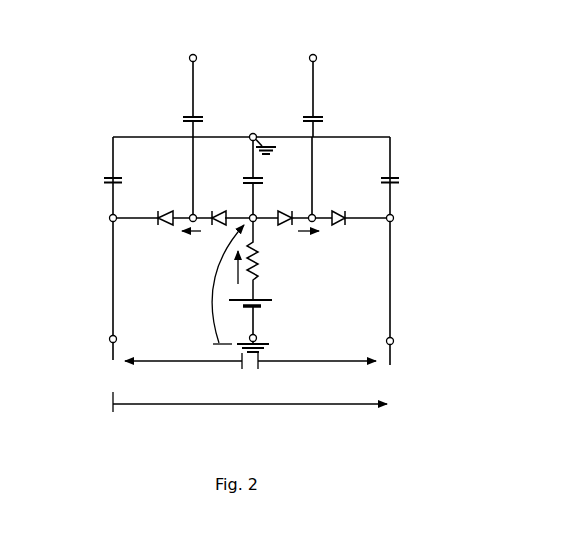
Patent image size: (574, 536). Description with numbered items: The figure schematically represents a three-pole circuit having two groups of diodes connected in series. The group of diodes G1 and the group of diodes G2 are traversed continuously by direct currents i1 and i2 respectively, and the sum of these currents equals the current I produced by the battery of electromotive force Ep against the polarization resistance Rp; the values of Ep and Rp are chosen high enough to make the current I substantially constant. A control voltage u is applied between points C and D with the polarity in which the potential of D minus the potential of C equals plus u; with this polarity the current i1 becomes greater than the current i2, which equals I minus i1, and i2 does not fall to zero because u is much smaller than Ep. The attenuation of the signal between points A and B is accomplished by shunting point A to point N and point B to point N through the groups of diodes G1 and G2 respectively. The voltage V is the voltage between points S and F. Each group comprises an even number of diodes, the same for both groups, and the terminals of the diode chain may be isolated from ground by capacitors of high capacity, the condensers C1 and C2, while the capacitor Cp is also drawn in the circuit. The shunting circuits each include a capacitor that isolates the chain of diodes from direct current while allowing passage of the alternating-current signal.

The point A is at (193, 128).
The point B is at (313, 128).
The point C is at (104, 337).
The point D is at (397, 336).
The point N is at (258, 136).
The point S is at (257, 211).
The point F is at (254, 341).
The group of diodes G1 is at (201, 209).
The group of diodes G2 is at (320, 209).
The condenser C1 is at (100, 182).
The condenser C2 is at (397, 182).
The capacitor Cp is at (260, 180).
The polarization resistance Rp is at (260, 261).
The battery of electromotive force Ep is at (252, 309).
The current I is at (230, 267).
The voltage V is at (217, 284).
The direct current i1 is at (190, 241).
The direct current i2 is at (308, 241).
The control voltage u is at (325, 352).